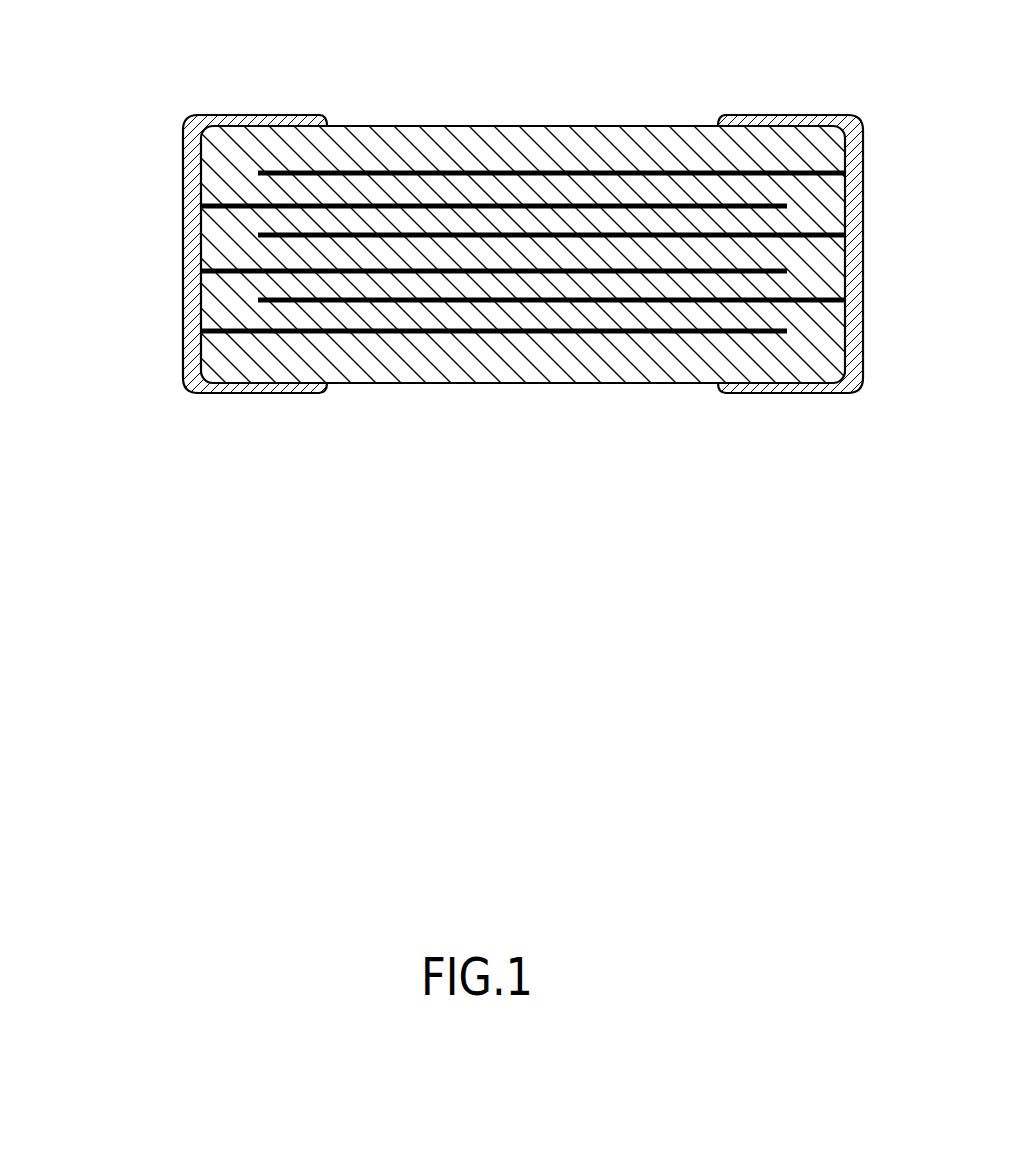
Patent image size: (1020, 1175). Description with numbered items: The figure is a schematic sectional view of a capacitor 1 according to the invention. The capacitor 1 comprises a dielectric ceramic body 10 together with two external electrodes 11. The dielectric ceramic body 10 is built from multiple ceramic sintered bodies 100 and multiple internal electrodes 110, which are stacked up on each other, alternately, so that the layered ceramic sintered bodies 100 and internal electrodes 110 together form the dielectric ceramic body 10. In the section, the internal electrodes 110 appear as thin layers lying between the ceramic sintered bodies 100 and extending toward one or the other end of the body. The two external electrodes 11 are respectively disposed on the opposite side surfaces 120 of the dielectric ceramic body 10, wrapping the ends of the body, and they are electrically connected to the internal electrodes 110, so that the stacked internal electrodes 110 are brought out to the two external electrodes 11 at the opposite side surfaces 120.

The capacitor 1 is at (582, 80).
The dielectric ceramic body 10 is at (510, 254).
The external electrodes 11 is at (863, 352).
The ceramic sintered bodies 100 is at (217, 175).
The internal electrodes 110 is at (201, 206).
The opposite side surfaces 120 is at (473, 237).